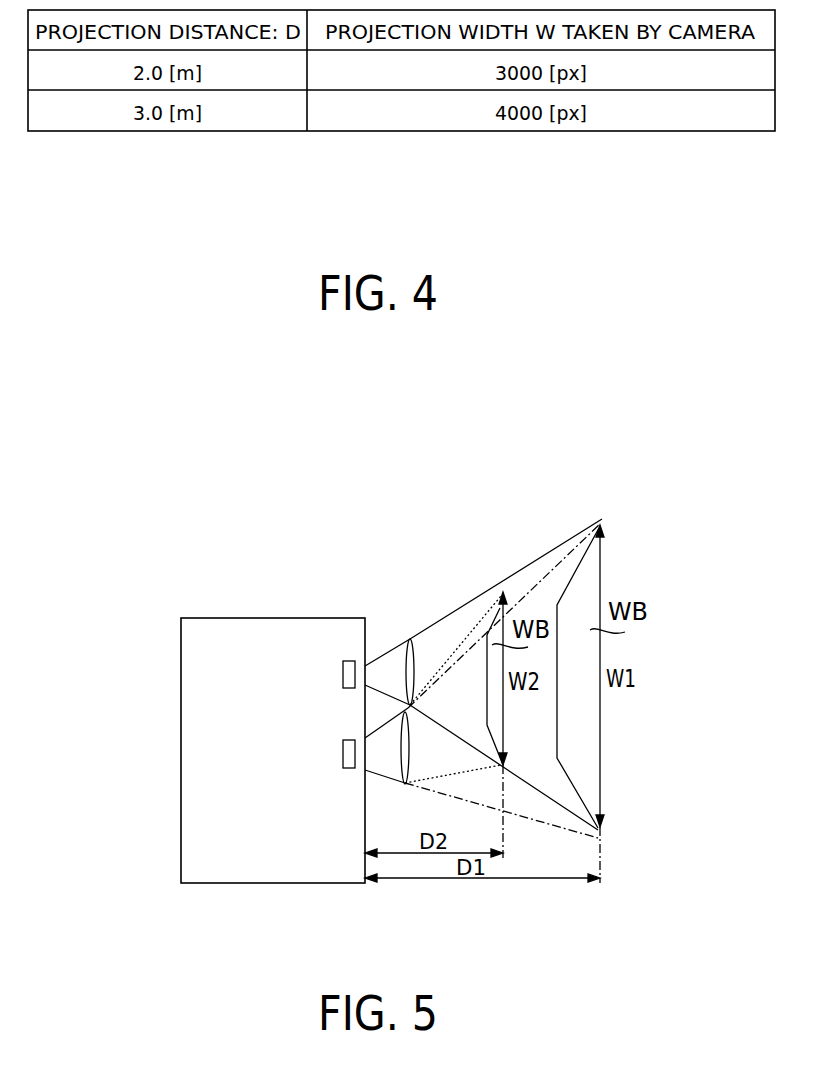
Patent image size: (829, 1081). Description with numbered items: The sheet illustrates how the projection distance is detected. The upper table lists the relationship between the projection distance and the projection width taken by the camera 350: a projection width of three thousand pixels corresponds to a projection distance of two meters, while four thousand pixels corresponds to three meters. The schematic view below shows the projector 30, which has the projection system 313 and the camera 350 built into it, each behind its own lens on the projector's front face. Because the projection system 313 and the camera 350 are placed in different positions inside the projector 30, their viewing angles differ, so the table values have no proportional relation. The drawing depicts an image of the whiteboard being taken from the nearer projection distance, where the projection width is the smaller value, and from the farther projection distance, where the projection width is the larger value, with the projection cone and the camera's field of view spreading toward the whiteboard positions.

The projector 30 is at (266, 617).
The projection system 313 is at (343, 677).
The camera 350 is at (343, 755).